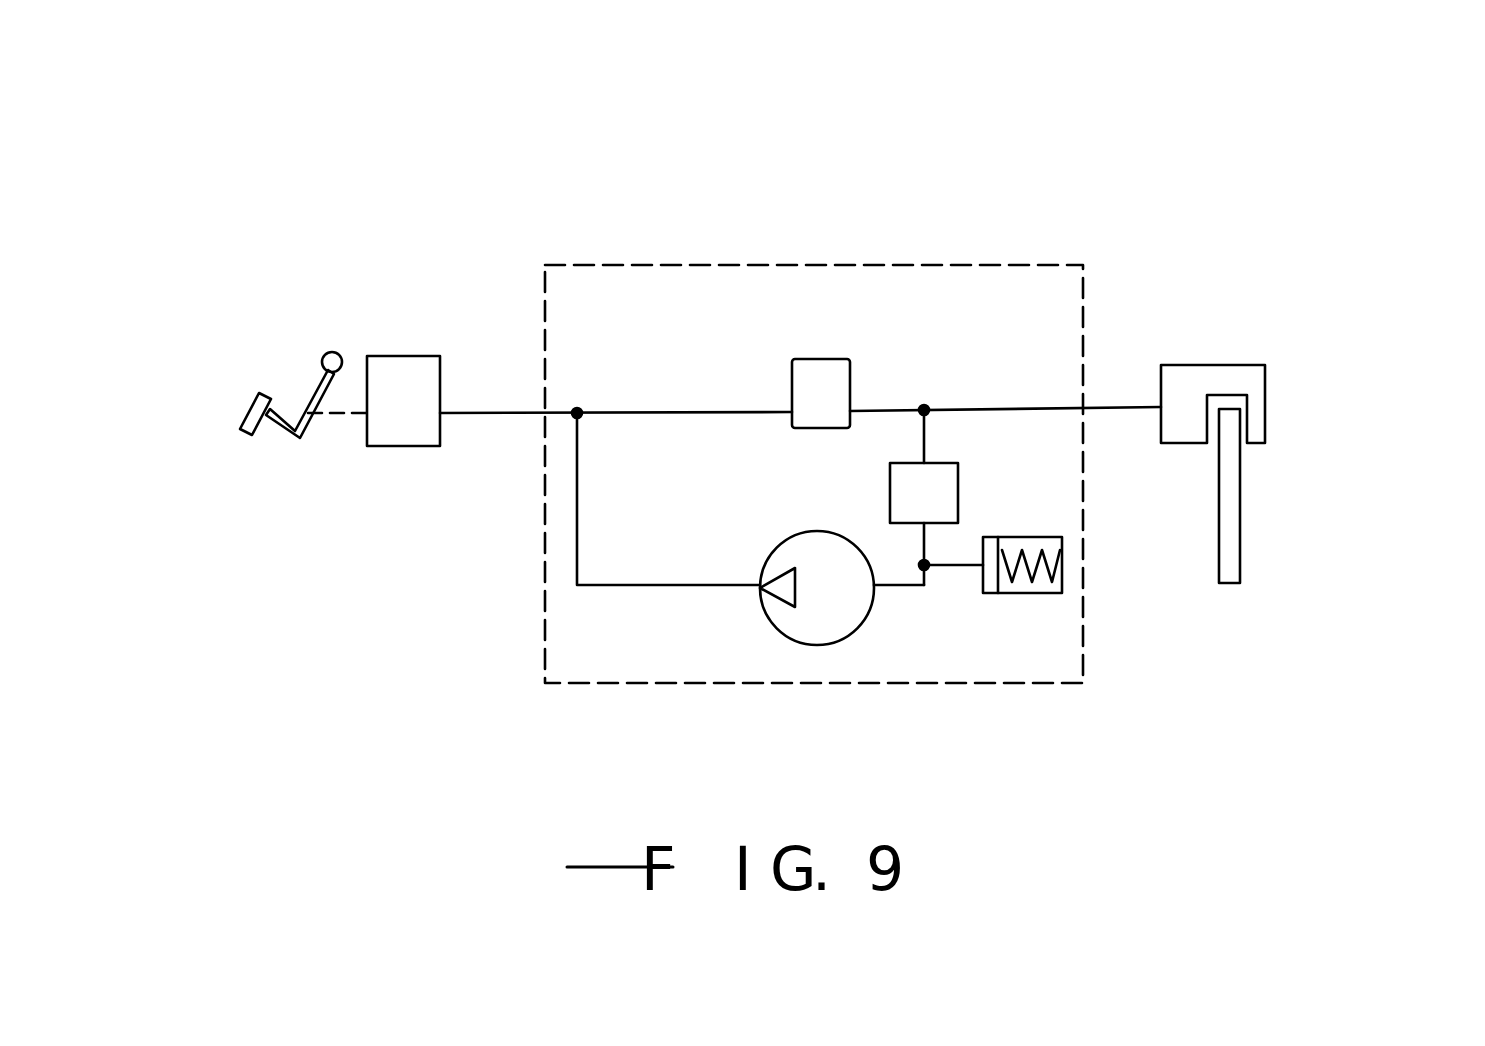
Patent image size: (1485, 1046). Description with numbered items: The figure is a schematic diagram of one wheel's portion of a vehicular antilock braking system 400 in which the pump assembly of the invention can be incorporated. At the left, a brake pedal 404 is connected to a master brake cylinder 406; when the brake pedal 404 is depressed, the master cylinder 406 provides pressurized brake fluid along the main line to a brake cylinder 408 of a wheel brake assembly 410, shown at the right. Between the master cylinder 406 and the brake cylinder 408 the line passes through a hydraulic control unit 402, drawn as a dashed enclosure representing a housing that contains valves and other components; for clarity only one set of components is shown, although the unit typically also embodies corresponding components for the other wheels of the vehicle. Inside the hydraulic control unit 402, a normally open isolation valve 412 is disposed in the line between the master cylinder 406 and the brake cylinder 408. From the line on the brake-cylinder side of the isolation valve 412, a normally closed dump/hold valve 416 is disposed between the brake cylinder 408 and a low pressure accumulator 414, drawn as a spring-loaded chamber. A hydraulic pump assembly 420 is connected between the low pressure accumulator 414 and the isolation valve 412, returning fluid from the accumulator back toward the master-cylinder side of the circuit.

The vehicular antilock braking system 400 is at (960, 165).
The hydraulic control unit 402 is at (675, 267).
The brake pedal 404 is at (240, 425).
The master brake cylinder 406 is at (400, 448).
The brake cylinder 408 is at (1222, 365).
The wheel brake assembly 410 is at (1282, 437).
The isolation valve 412 is at (820, 358).
The low pressure accumulator 414 is at (1035, 595).
The dump/hold valve 416 is at (958, 502).
The hydraulic pump assembly 420 is at (825, 493).